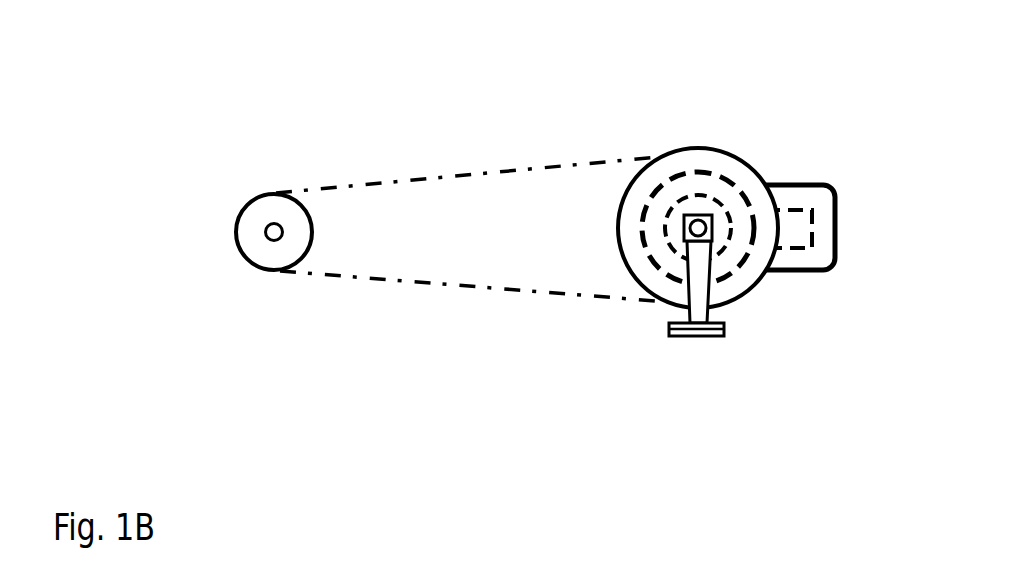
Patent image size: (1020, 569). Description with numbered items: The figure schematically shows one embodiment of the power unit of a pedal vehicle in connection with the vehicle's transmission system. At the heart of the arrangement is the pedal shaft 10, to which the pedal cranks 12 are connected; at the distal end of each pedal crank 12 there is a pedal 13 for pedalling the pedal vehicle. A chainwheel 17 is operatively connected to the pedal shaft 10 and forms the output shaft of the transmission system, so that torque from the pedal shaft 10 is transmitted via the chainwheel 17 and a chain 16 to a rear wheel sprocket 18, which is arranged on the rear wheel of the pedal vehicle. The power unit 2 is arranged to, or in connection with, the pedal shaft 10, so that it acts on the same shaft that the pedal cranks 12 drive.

The power unit 2 is at (786, 185).
The pedal shaft 10 is at (698, 220).
The pedal crank 12 is at (696, 292).
The pedal 13 is at (717, 336).
The chain 16 is at (467, 173).
The chainwheel 17 is at (732, 157).
The rear wheel sprocket 18 is at (268, 218).